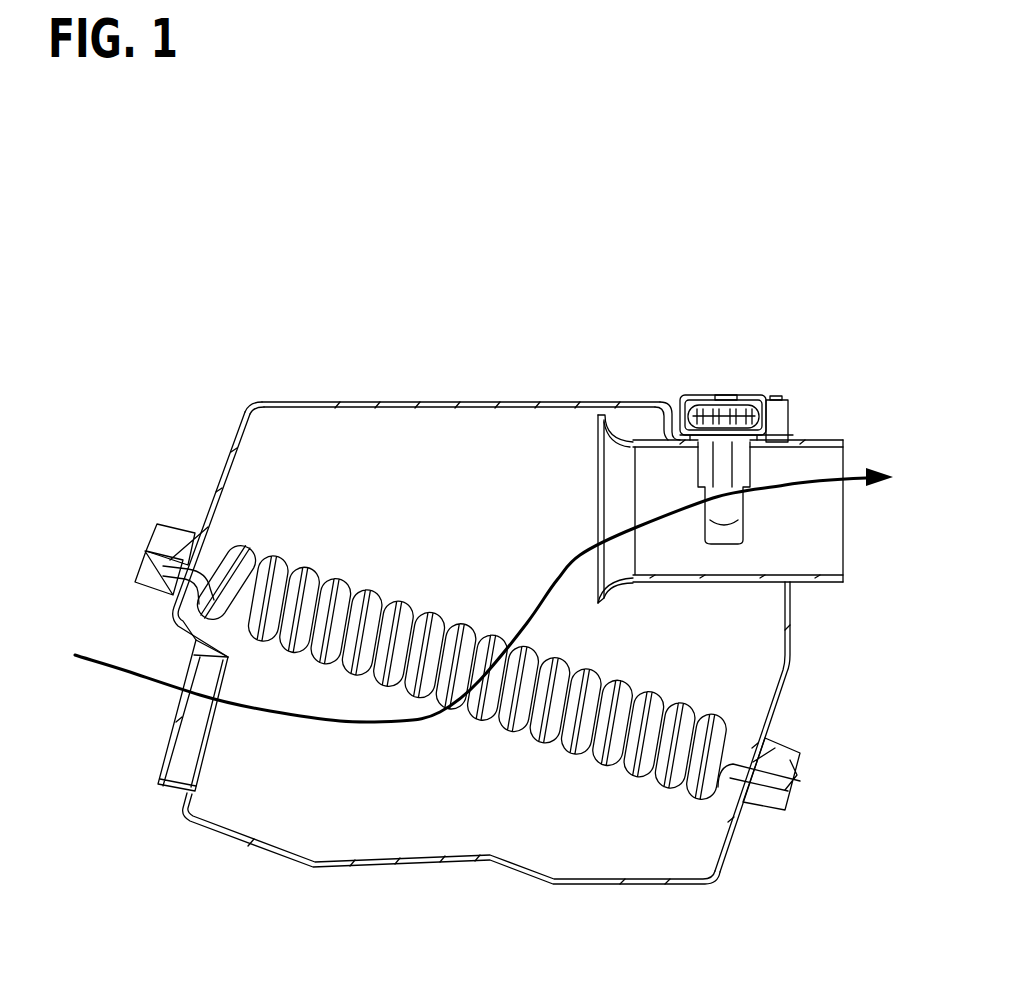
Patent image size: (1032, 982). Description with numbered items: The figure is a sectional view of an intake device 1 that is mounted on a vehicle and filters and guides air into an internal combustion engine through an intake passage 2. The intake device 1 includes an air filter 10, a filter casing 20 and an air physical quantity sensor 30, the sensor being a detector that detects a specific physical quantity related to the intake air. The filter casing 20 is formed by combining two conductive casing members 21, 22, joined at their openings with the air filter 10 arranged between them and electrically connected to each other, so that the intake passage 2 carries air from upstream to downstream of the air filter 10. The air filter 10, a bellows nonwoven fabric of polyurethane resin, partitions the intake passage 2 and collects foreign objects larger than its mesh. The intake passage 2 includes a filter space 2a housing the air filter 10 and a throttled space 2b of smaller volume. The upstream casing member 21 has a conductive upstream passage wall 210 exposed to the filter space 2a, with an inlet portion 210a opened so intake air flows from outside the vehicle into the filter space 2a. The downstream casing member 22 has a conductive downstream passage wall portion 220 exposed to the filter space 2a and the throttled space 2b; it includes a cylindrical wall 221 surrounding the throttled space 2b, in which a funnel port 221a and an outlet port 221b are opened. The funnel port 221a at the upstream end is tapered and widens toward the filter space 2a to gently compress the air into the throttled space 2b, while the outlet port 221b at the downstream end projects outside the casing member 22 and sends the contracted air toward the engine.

The intake device 1 is at (240, 358).
The air filter 10 is at (582, 760).
The filter casing 20 is at (70, 463).
The upstream casing member 21 is at (148, 574).
The downstream casing member 22 is at (157, 537).
The intake passage 2 is at (893, 680).
The filter space 2a is at (712, 832).
The throttled space 2b is at (753, 562).
The air physical quantity sensor 30 is at (766, 391).
The upstream passage wall 210 is at (428, 866).
The inlet portion 210a is at (167, 750).
The downstream passage wall portion 220 is at (698, 400).
The cylindrical wall 221 is at (808, 440).
The funnel port 221a is at (610, 497).
The outlet port 221b is at (847, 457).